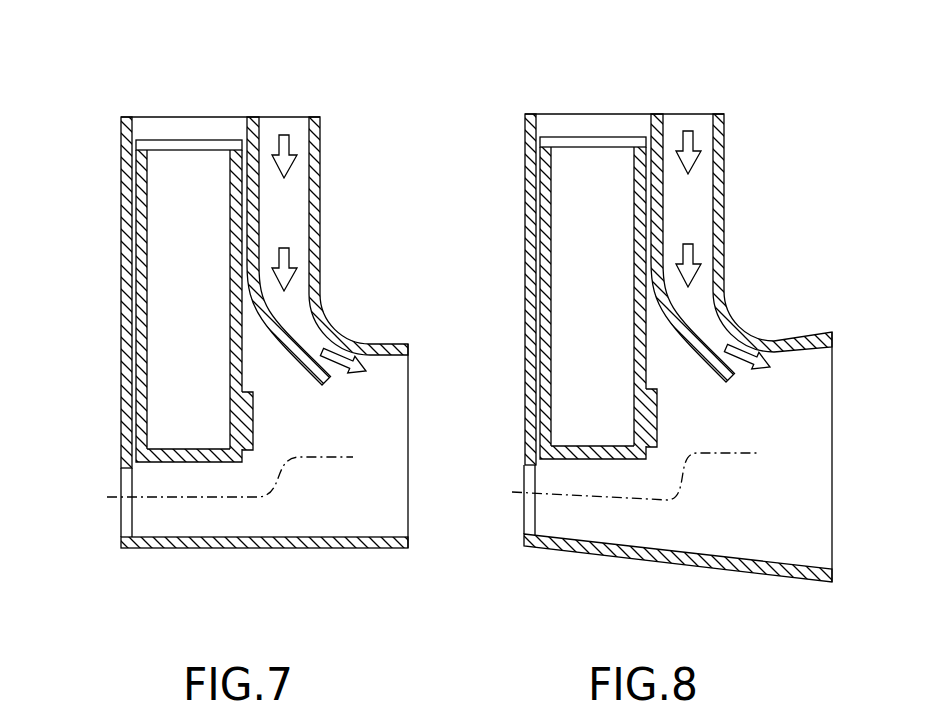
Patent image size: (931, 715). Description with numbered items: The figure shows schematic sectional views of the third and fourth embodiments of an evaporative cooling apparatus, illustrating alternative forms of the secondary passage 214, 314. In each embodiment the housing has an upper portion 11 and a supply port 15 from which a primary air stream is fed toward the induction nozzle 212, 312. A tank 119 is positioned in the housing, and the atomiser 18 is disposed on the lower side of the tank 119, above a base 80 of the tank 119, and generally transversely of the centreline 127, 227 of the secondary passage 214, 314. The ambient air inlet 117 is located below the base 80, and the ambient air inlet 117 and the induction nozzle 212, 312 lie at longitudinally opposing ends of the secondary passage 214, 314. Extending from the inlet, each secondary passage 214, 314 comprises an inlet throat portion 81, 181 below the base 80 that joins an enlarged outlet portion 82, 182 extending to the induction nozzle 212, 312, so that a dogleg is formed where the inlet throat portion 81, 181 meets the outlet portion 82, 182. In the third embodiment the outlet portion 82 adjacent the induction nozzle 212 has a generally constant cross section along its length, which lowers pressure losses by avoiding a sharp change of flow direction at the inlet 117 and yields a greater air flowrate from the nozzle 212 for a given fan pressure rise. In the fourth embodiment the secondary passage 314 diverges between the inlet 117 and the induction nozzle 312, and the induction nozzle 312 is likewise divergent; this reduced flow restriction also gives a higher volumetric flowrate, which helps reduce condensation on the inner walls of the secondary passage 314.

In FIG. 7, the upper portion 11 is at (121, 152).
In FIG. 8, the upper portion 11 is at (524, 148).
In FIG. 7, the supply port 15 is at (298, 117).
In FIG. 8, the supply port 15 is at (702, 138).
In FIG. 7, the tank 119 is at (158, 226).
In FIG. 8, the tank 119 is at (563, 223).
In FIG. 7, the ambient air inlet 117 is at (123, 477).
In FIG. 8, the ambient air inlet 117 is at (527, 477).
In FIG. 7, the atomiser 18 is at (255, 410).
In FIG. 8, the atomiser 18 is at (659, 410).
In FIG. 7, the base 80 is at (207, 462).
In FIG. 8, the base 80 is at (613, 459).
In FIG. 7, the inlet throat portion 81 is at (188, 513).
In FIG. 7, the outlet portion 82 is at (333, 512).
In FIG. 7, the centreline 127 is at (318, 456).
In FIG. 7, the induction nozzle 212 is at (405, 334).
In FIG. 7, the secondary passage 214 is at (262, 519).
In FIG. 8, the induction nozzle 312 is at (801, 335).
In FIG. 8, the secondary passage 314 is at (665, 538).
In FIG. 8, the centreline 227 is at (737, 453).
In FIG. 8, the inlet throat portion 181 is at (621, 525).
In FIG. 8, the outlet portion 182 is at (739, 525).